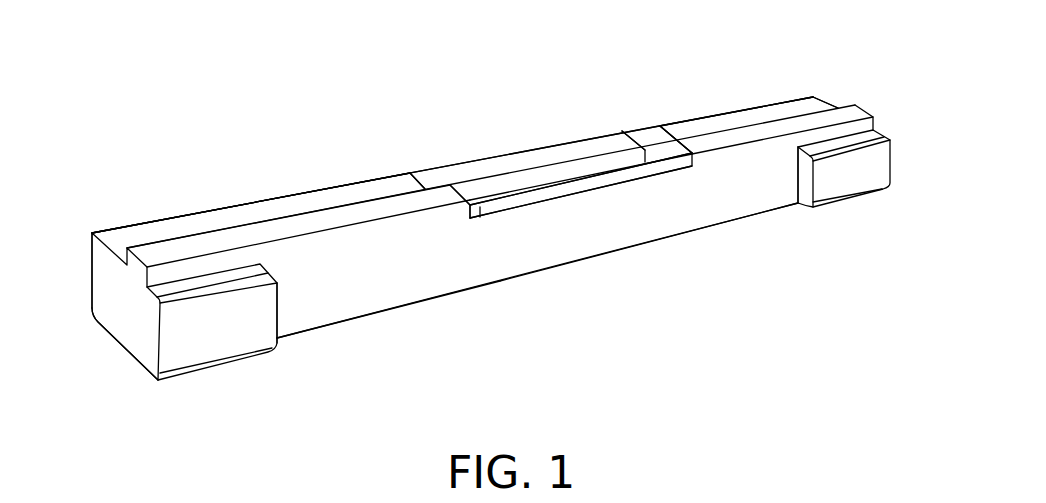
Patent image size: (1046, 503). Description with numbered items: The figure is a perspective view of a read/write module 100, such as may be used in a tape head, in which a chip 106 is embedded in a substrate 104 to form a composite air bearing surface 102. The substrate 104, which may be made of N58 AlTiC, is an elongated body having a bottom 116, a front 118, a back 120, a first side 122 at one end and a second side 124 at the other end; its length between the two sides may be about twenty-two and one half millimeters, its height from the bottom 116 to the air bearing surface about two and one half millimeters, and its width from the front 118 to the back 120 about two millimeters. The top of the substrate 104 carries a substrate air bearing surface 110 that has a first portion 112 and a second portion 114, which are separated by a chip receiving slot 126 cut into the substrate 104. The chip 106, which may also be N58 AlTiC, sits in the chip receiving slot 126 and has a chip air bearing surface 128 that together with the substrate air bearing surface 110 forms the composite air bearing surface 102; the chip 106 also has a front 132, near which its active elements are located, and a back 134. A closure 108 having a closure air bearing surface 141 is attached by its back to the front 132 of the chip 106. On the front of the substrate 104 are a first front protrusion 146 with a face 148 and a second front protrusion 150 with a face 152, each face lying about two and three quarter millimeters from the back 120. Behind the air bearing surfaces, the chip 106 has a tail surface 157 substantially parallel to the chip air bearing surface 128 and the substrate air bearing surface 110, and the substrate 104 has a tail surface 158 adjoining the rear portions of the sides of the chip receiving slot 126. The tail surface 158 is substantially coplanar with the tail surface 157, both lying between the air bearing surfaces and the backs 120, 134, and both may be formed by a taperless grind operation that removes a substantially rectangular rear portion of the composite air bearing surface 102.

The module 100 is at (712, 338).
The composite air bearing surface 102 is at (287, 227).
The substrate 104 is at (522, 248).
The chip 106 is at (560, 172).
The closure 108 is at (523, 192).
The substrate air bearing surface 110 is at (320, 223).
The first portion 112 is at (380, 210).
The second portion 114 is at (752, 130).
The bottom 116 is at (650, 252).
The front 118 is at (347, 280).
The back 120 is at (90, 260).
The first side 122 is at (137, 308).
The second side 124 is at (838, 107).
The chip receiving slot 126 is at (473, 217).
The chip air bearing surface 128 is at (660, 150).
The front of the chip 132 is at (648, 162).
The back 134 is at (548, 150).
The closure air bearing surface 141 is at (543, 188).
The first front protrusion 146 is at (278, 312).
The face 148 is at (203, 342).
The second front protrusion 150 is at (803, 198).
The face 152 is at (803, 198).
The tail surface 157 is at (447, 175).
The tail surface 158 is at (175, 228).